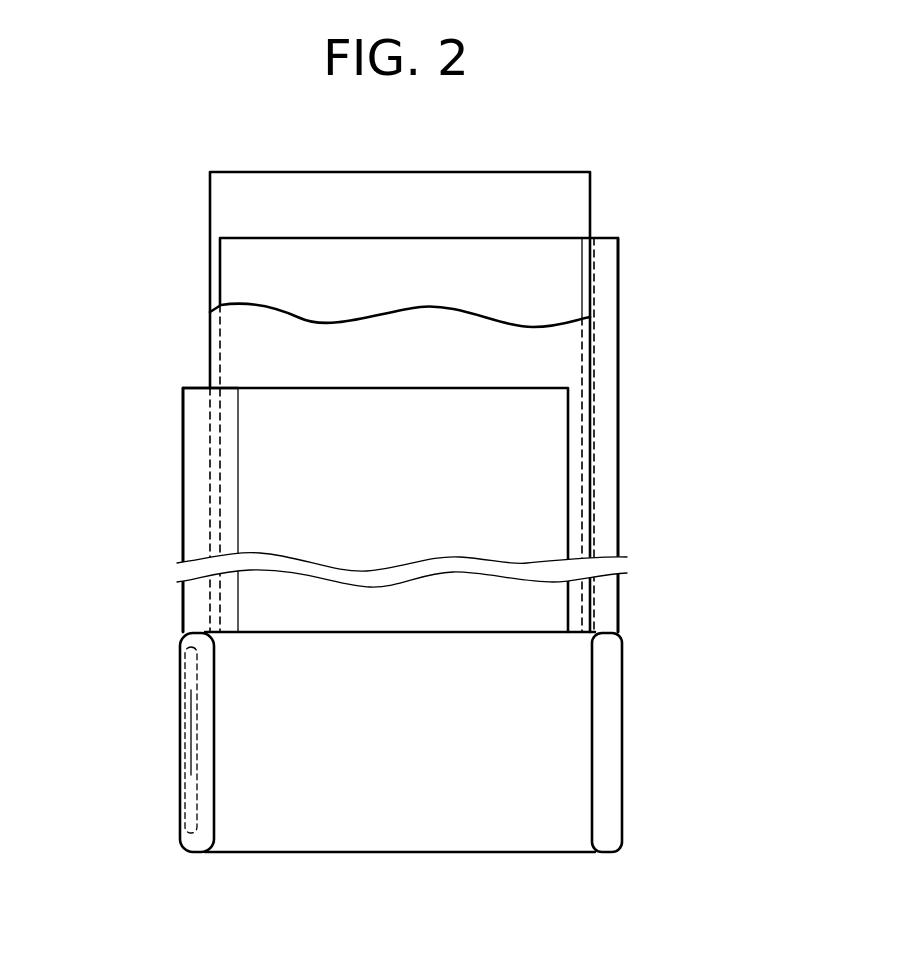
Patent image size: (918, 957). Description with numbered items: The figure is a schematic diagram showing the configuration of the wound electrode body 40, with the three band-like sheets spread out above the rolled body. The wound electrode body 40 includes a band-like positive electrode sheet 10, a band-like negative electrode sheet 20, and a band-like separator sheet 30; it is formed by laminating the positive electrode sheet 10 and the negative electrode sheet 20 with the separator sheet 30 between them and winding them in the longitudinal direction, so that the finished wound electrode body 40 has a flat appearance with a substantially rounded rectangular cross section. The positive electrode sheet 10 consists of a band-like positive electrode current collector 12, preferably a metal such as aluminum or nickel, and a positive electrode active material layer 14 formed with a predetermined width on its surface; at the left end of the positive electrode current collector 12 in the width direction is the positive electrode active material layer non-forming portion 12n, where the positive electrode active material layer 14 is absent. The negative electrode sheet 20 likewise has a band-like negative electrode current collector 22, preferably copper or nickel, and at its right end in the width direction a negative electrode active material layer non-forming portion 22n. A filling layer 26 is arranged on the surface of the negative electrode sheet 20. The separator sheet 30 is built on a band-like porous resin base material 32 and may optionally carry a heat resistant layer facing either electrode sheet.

The positive electrode sheet 10 is at (181, 471).
The positive electrode current collector 12 is at (177, 547).
The positive electrode active material layer non-forming portion 12n is at (200, 508).
The positive electrode active material layer 14 is at (253, 413).
The negative electrode sheet 20 is at (620, 327).
The negative electrode current collector 22 is at (620, 443).
The negative electrode active material layer non-forming portion 22n is at (605, 382).
The filling layer 26 is at (578, 268).
The separator sheet 30 is at (208, 203).
The resin base material 32 is at (265, 342).
The wound electrode body 40 is at (470, 829).